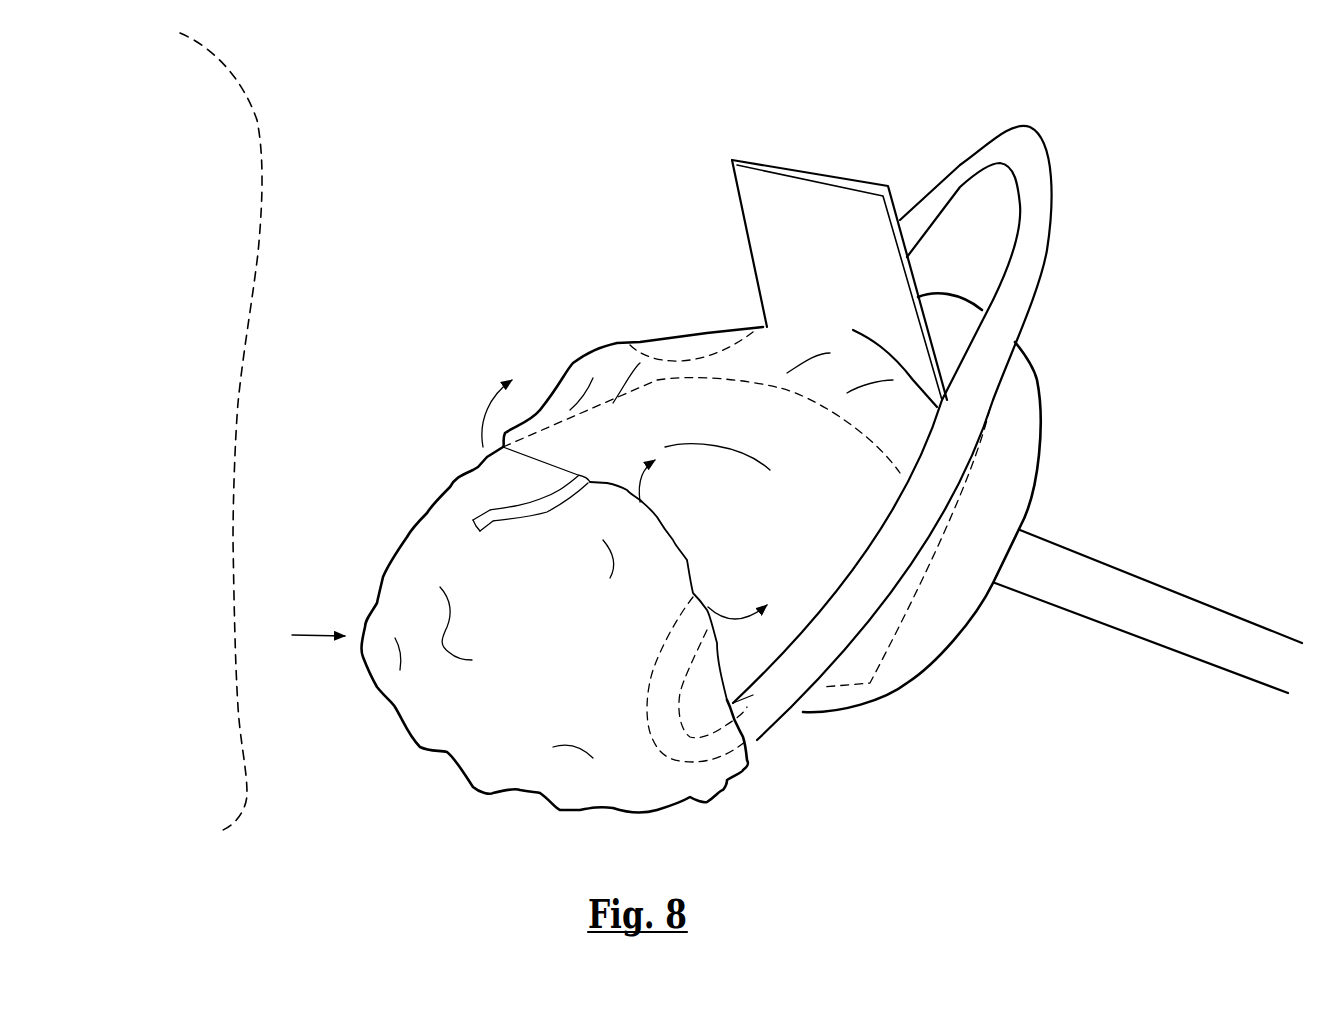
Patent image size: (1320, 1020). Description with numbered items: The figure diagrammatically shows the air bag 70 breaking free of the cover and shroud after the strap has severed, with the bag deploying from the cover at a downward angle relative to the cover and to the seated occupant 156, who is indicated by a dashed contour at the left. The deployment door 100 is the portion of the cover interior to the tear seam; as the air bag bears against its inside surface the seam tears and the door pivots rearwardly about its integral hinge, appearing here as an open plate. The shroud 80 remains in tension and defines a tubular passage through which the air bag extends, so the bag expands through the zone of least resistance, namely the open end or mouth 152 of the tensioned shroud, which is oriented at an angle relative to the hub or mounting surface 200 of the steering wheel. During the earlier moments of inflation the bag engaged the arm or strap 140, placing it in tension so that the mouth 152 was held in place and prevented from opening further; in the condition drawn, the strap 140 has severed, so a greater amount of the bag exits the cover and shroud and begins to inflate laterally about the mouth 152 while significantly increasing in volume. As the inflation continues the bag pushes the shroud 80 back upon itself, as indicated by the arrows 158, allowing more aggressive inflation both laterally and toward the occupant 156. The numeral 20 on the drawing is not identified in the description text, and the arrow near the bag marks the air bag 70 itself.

The heart 20 is at (583, 305).
The air bag 70 is at (315, 618).
The shroud 80 is at (688, 522).
The deployment door 100 is at (825, 207).
The strap 140 is at (510, 510).
The mouth 152 is at (598, 497).
The seated occupant 156 is at (222, 167).
The arrows 158 is at (598, 499).
The mounting surface 200 is at (1022, 148).